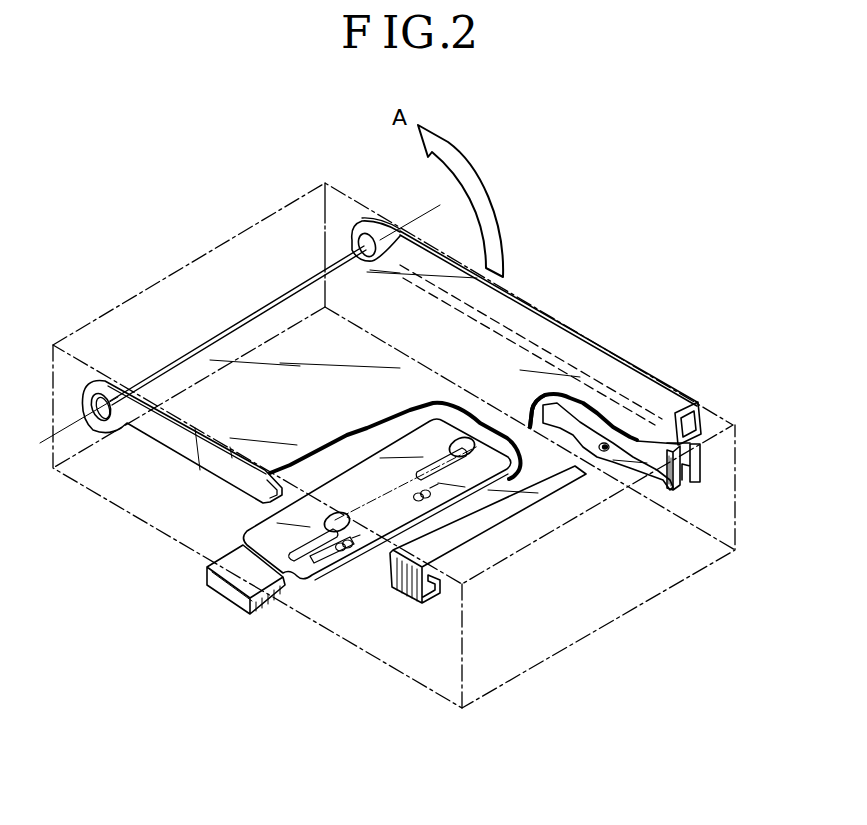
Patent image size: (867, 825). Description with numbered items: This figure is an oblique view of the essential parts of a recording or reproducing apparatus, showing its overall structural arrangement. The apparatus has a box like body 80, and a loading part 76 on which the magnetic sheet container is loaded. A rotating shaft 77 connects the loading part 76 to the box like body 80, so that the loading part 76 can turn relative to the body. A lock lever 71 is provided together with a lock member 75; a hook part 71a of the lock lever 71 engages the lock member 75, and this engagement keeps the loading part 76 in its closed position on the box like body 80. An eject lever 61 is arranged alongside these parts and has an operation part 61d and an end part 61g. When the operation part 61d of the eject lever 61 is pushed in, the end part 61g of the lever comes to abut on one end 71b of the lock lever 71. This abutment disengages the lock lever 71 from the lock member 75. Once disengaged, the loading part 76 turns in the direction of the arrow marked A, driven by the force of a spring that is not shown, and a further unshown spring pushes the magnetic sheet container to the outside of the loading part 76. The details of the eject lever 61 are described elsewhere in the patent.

The eject lever 61 is at (238, 540).
The operation part of the eject lever 61d is at (234, 596).
The end part of the eject lever 61g is at (485, 458).
The lock lever 71 is at (610, 557).
The hook part of the lock lever 71a is at (674, 489).
The one end of the lock lever 71b is at (530, 405).
The lock member 75 is at (692, 470).
The loading part 76 is at (611, 360).
The rotating shaft 77 is at (69, 430).
The box like body 80 is at (428, 695).